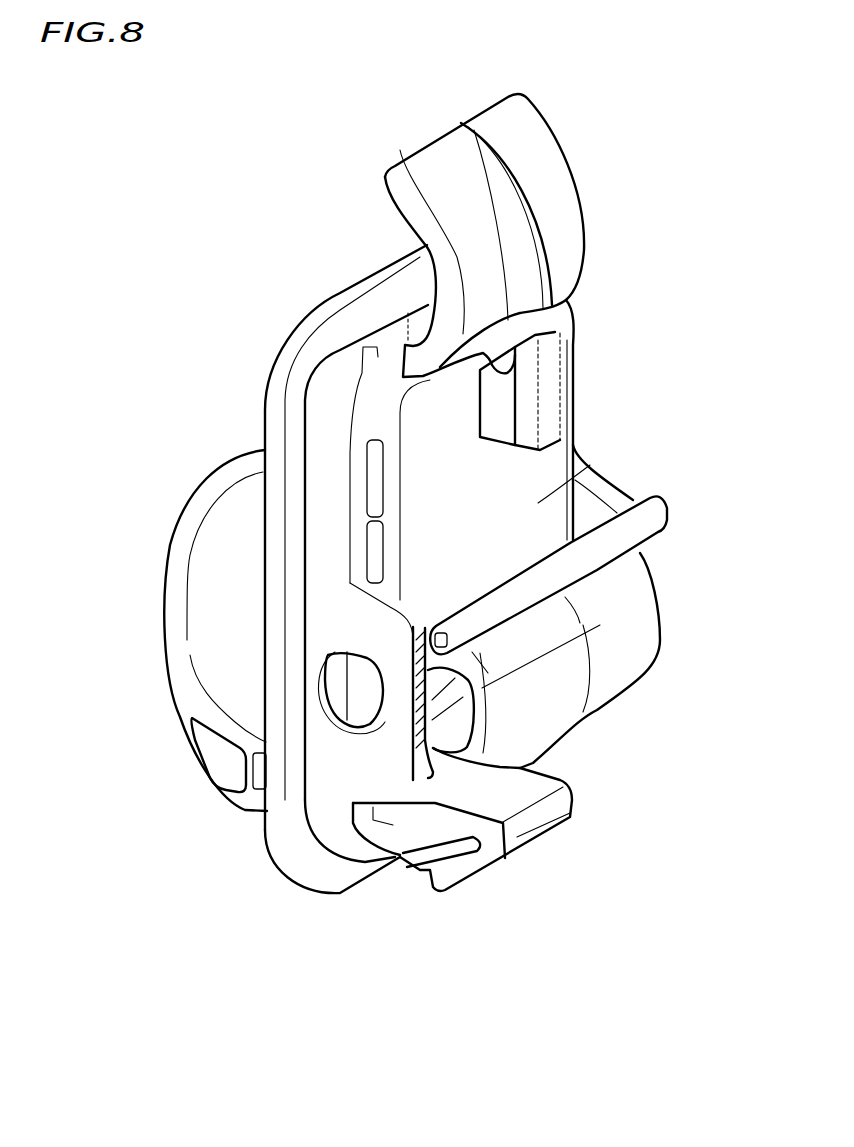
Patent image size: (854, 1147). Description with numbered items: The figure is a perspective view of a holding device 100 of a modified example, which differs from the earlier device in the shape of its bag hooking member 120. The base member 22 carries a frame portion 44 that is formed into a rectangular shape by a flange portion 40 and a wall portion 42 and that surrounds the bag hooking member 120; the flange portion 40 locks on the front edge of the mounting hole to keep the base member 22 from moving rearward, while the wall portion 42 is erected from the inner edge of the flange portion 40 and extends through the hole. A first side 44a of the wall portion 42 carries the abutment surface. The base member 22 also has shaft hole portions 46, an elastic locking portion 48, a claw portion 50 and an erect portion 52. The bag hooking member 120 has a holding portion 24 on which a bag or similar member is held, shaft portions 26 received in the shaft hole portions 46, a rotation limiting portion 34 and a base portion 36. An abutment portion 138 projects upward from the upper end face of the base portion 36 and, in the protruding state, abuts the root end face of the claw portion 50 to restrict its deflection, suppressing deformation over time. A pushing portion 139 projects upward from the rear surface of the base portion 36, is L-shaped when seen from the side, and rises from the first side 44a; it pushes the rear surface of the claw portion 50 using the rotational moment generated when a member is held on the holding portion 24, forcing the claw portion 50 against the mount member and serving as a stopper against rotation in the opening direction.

The base member 22 is at (290, 862).
The holding portion 24 is at (212, 600).
The shaft portions 26 is at (347, 688).
The rotation limiting portion 34 is at (643, 527).
The base portion 36 is at (537, 503).
The flange portion 40 is at (320, 345).
The wall portion 42 is at (327, 423).
The frame portion 44 is at (290, 537).
The first side 44a is at (410, 328).
The shaft hole portions 46 is at (342, 728).
The elastic locking portion 48 is at (533, 825).
The claw portion 50 is at (557, 162).
The erect portion 52 is at (342, 308).
The holding device 100 is at (489, 939).
The bag hooking member 120 is at (657, 657).
The abutment portion 138 is at (536, 398).
The pushing portion 139 is at (552, 361).